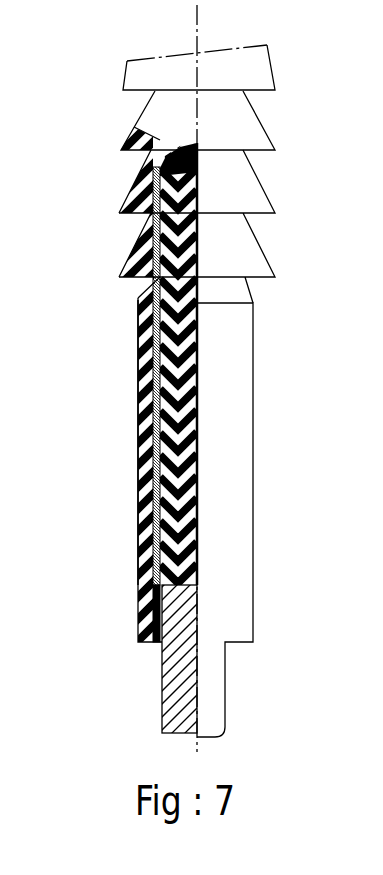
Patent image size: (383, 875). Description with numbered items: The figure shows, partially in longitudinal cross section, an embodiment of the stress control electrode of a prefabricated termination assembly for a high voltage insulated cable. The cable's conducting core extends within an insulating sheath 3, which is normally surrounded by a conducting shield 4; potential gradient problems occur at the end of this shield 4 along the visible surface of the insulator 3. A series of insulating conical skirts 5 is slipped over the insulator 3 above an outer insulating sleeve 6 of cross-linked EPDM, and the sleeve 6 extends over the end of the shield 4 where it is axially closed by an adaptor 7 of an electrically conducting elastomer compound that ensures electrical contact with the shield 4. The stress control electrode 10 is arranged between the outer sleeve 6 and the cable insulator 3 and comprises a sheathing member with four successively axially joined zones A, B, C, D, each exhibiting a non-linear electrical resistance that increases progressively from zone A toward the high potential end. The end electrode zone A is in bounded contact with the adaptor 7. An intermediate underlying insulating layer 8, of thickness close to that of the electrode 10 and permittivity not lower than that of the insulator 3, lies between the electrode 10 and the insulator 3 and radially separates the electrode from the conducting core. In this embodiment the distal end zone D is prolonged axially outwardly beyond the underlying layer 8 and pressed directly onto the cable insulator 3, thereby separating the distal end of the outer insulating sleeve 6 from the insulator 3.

The insulating sheath 3 is at (137, 130).
The conducting shield 4 is at (177, 695).
The insulating conical skirts 5 is at (143, 72).
The outer insulating sleeve 6 is at (148, 315).
The adaptor 7 is at (137, 610).
The underlying insulating layer 8 is at (138, 262).
The stress control electrode 10 is at (162, 431).
The end electrode zone A is at (138, 522).
The electrode zone B is at (138, 467).
The electrode zone C is at (137, 397).
The distal end zone D is at (140, 343).